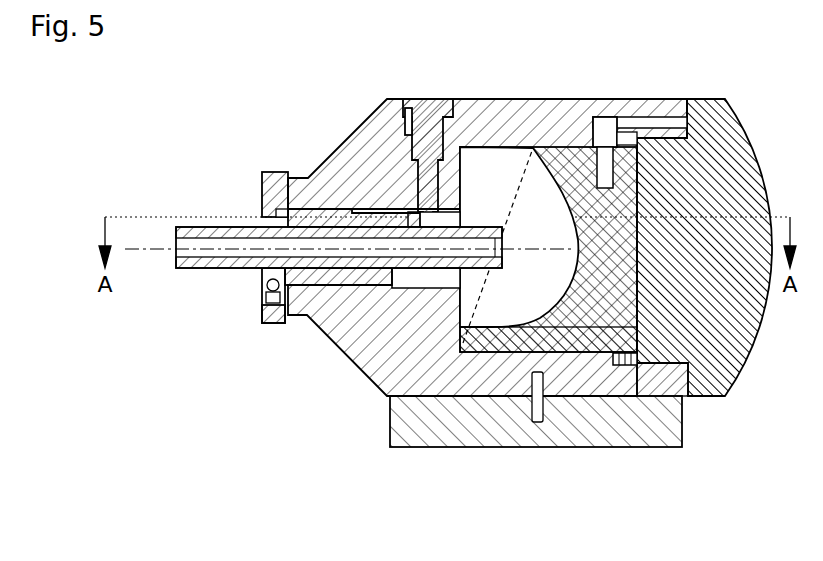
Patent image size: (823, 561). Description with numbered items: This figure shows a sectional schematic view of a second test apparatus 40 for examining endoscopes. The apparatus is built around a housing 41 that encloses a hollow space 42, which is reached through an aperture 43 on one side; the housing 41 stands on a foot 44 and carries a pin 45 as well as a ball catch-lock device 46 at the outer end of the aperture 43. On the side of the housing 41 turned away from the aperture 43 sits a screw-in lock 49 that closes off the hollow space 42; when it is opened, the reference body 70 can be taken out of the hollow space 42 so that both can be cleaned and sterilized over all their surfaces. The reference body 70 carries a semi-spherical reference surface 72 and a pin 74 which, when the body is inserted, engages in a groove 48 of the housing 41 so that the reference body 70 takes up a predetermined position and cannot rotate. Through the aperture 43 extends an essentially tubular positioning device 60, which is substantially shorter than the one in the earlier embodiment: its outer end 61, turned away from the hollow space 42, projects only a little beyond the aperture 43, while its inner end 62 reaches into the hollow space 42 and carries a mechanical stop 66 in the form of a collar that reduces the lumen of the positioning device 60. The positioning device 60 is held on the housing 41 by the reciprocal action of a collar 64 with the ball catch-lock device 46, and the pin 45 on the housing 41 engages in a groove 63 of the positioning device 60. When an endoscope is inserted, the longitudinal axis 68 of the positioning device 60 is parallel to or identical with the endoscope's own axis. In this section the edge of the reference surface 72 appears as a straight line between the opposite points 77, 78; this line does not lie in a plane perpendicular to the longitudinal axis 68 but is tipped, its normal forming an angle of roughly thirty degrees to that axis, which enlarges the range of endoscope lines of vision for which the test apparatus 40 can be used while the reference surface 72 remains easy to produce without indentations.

The test apparatus 40 is at (530, 267).
The housing 41 is at (570, 127).
The hollow space 42 is at (443, 113).
The aperture 43 is at (407, 287).
The foot 44 is at (537, 437).
The pin 45 is at (425, 117).
The ball catch-lock device 46 is at (260, 295).
The groove 48 is at (655, 118).
The screw-in lock 49 is at (722, 398).
The positioning device 60 is at (345, 245).
The end 61 is at (178, 230).
The end 62 is at (463, 345).
The groove 63 is at (467, 237).
The collar 64 is at (283, 217).
The mechanical stop 66 is at (488, 255).
The longitudinal axis 68 is at (165, 249).
The reference body 70 is at (613, 362).
The reference surface 72 is at (540, 313).
The pin 74 is at (610, 123).
The point 77 is at (470, 323).
The point 78 is at (503, 160).